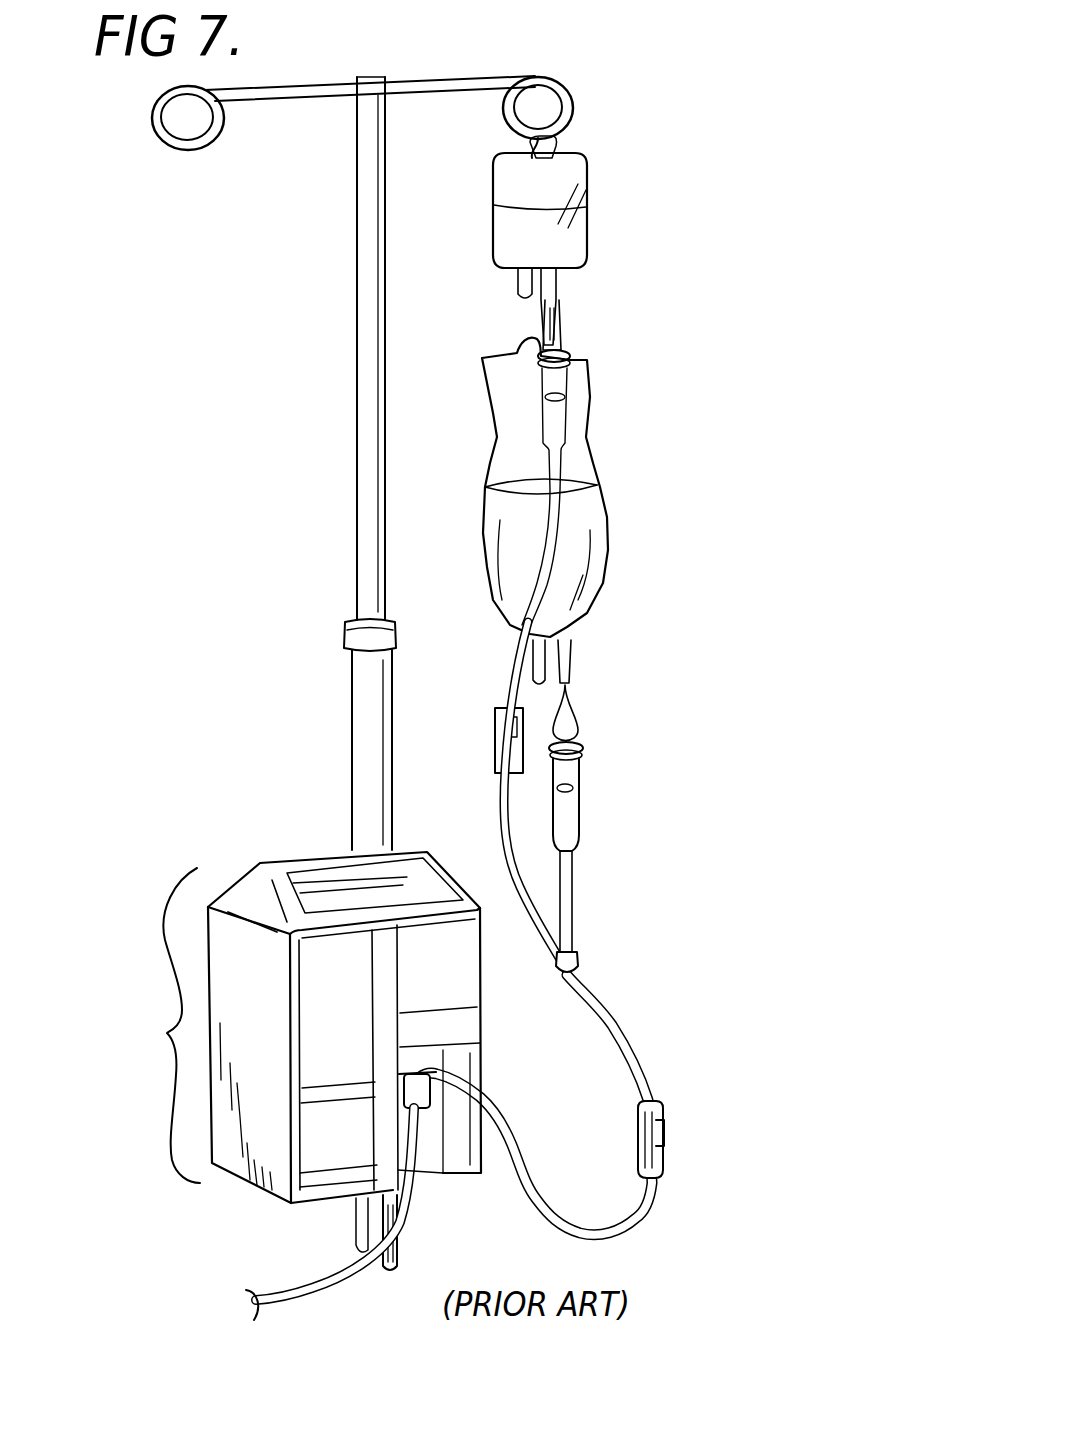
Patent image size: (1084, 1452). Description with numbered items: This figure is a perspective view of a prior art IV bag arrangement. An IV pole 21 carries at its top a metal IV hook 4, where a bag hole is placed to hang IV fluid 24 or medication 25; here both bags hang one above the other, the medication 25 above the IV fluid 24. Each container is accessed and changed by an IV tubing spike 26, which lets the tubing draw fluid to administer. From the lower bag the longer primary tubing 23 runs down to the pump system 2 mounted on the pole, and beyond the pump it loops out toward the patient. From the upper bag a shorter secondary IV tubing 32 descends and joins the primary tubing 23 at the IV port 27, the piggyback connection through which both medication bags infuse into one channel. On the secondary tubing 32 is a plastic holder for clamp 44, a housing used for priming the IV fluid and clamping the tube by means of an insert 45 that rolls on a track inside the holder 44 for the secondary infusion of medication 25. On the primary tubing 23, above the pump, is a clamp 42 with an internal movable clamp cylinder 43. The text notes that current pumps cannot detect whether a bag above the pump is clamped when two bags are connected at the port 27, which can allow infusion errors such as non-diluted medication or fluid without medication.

The pump system 2 is at (294, 1027).
The metal IV hook 4 is at (576, 110).
The IV pole 21 is at (350, 744).
The primary IV tubing 23 is at (634, 1033).
The IV fluid 24 is at (592, 455).
The medication 25 is at (592, 208).
The IV tubing spike 26 is at (568, 333).
The IV port 27 is at (570, 958).
The secondary IV tubing 32 is at (540, 870).
The clamp 42 is at (664, 1106).
The internal movable clamp cylinder 43 is at (665, 1133).
The plastic holder for clamp 44 is at (523, 753).
The insert 45 is at (523, 717).